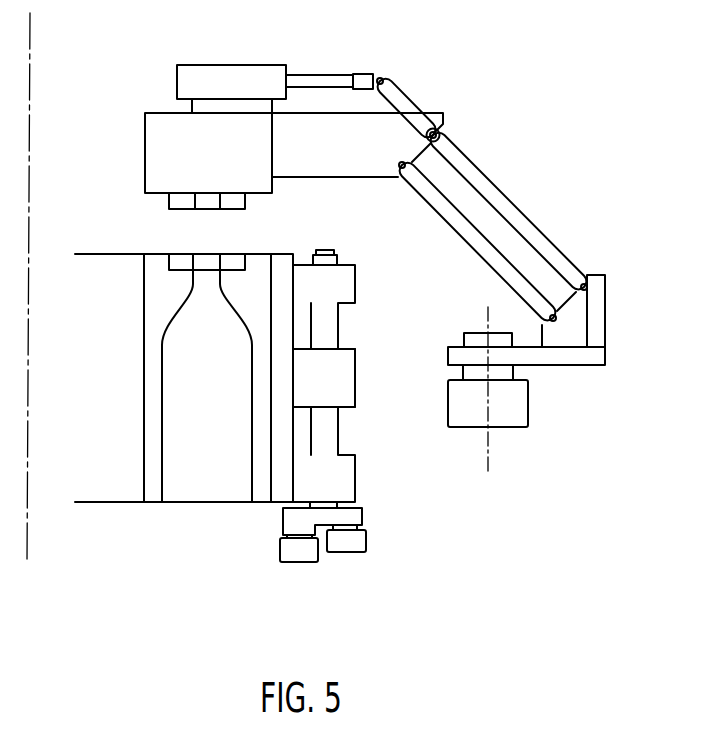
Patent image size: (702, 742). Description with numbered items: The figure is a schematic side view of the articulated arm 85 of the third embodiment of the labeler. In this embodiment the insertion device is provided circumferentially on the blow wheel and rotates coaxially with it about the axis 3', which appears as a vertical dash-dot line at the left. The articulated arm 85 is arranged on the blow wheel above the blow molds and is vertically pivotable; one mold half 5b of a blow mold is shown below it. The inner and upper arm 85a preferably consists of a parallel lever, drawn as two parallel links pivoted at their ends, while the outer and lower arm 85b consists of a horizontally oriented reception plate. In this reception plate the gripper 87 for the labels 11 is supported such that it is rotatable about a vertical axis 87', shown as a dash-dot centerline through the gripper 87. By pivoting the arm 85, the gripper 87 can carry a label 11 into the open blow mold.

The axis 3' is at (57, 284).
The mold half 5b is at (157, 264).
The articulated arm 85 is at (405, 218).
The inner and upper arm 85a is at (505, 200).
The outer and lower arm 85b is at (597, 357).
The gripper 87 is at (469, 336).
The vertical axis 87' is at (455, 393).
The label 11 is at (522, 405).